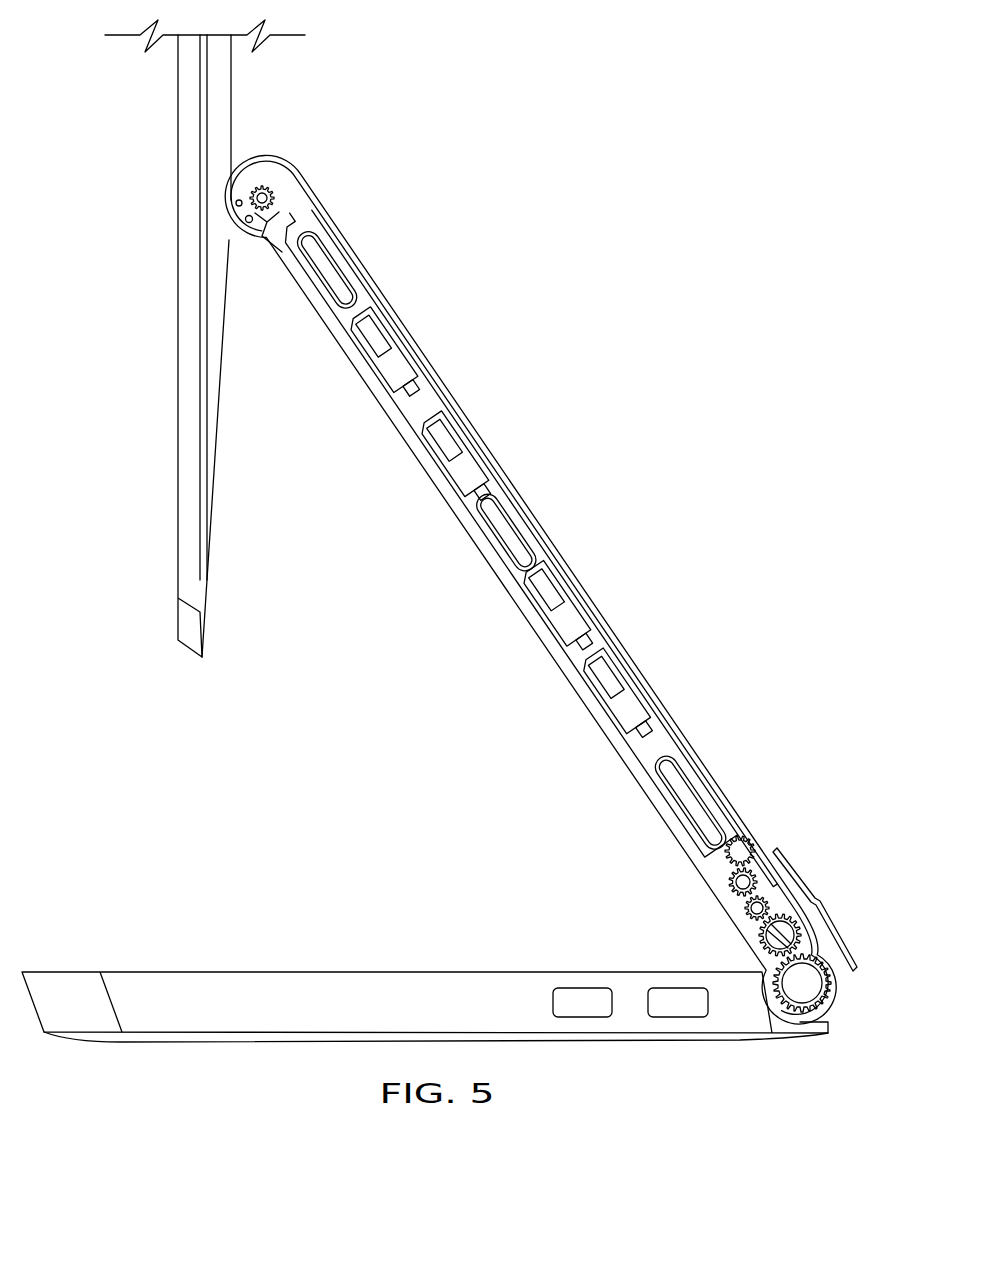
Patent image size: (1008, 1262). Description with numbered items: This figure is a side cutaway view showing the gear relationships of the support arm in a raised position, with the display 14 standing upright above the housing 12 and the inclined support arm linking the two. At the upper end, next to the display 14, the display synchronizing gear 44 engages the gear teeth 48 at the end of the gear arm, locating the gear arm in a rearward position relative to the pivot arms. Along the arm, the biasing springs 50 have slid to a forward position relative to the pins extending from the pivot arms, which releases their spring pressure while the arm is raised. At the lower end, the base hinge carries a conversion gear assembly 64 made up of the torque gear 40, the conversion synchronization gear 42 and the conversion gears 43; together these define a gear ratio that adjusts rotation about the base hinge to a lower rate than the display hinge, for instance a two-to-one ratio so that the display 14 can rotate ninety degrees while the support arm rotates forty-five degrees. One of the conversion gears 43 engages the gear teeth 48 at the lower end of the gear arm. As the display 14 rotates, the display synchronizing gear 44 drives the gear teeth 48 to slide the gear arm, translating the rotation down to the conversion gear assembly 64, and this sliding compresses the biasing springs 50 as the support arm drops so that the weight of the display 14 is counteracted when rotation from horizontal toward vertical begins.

The housing 12 is at (195, 1046).
The display 14 is at (178, 277).
The torque gear 40 is at (831, 984).
The conversion synchronization gear 42 is at (760, 932).
The conversion gears 43 is at (733, 878).
The display synchronizing gear 44 is at (283, 212).
The gear teeth 48 is at (262, 183).
The biasing springs 50 is at (417, 373).
The conversion gear assembly 64 is at (820, 897).